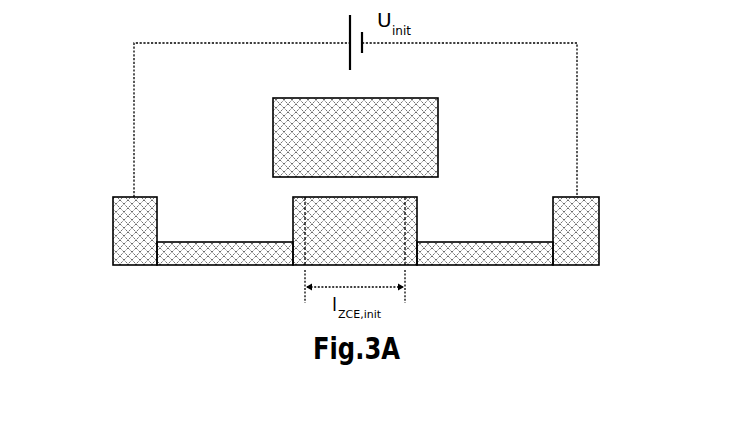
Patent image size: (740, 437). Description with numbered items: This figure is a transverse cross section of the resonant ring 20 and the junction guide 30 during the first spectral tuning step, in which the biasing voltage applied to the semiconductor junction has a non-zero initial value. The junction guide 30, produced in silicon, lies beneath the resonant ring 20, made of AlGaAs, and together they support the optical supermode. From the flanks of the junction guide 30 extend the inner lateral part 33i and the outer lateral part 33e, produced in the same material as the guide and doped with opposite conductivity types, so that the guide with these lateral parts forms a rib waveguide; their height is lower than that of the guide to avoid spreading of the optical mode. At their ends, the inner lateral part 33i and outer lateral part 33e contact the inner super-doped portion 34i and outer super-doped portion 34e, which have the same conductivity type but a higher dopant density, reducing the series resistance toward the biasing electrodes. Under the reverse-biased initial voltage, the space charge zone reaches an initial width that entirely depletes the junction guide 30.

The resonant ring 20 is at (270, 136).
The junction guide 30 is at (292, 229).
The outer lateral part 33e is at (226, 267).
The inner lateral part 33i is at (488, 267).
The outer super-doped portion 34e is at (112, 232).
The inner super-doped portion 34i is at (601, 230).